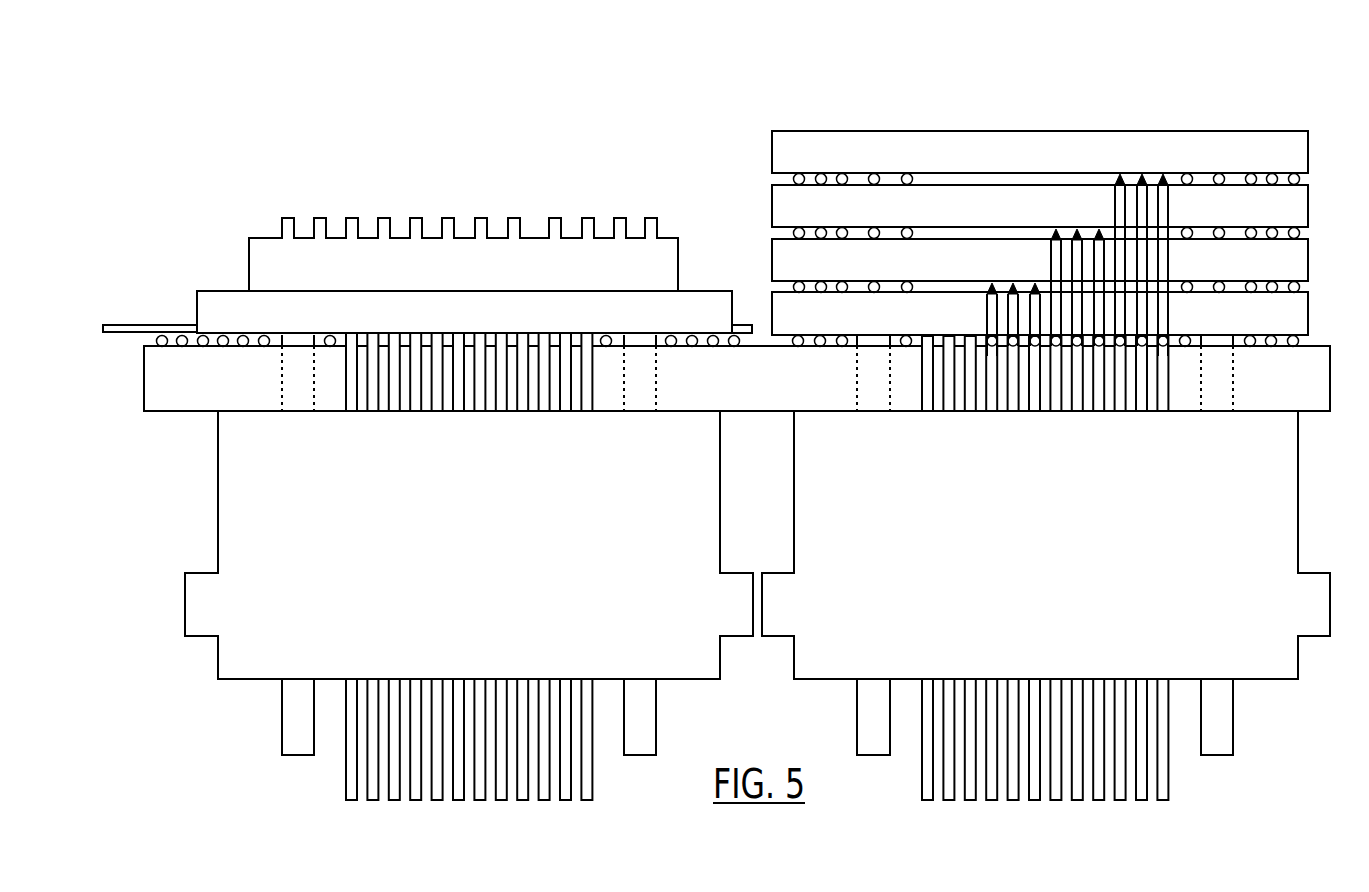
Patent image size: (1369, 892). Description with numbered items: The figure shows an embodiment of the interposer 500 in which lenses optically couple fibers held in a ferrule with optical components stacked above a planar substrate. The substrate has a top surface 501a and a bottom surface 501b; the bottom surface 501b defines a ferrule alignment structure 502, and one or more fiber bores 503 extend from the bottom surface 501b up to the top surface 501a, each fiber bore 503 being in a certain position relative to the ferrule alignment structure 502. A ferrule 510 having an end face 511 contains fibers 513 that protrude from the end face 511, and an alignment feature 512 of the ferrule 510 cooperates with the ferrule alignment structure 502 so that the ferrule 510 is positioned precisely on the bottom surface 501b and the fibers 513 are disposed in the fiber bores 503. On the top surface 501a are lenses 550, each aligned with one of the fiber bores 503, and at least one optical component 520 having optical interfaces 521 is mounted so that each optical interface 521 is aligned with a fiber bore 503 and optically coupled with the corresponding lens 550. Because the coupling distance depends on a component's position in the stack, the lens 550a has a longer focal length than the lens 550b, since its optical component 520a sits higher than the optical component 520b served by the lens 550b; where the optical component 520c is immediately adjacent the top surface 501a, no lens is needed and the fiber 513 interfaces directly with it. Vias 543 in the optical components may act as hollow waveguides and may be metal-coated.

The interposer 500 is at (1042, 262).
The top surface 501a is at (1323, 347).
The bottom surface 501b is at (1312, 412).
The ferrule alignment structure 502 is at (1217, 387).
The fiber bore 503 is at (1162, 385).
The ferrule 510 is at (1298, 503).
The end face 511 is at (1278, 411).
The alignment feature 512 is at (870, 342).
The fiber 513 is at (927, 393).
The optical component 520 is at (1042, 218).
The optical component 520a is at (1310, 152).
The optical component 520b is at (1333, 292).
The optical component 520c is at (772, 310).
The optical interface 521 is at (1115, 181).
The via 543 is at (1168, 207).
The lens 550 is at (1167, 337).
The lens 550a is at (1168, 350).
The lens 550b is at (993, 346).